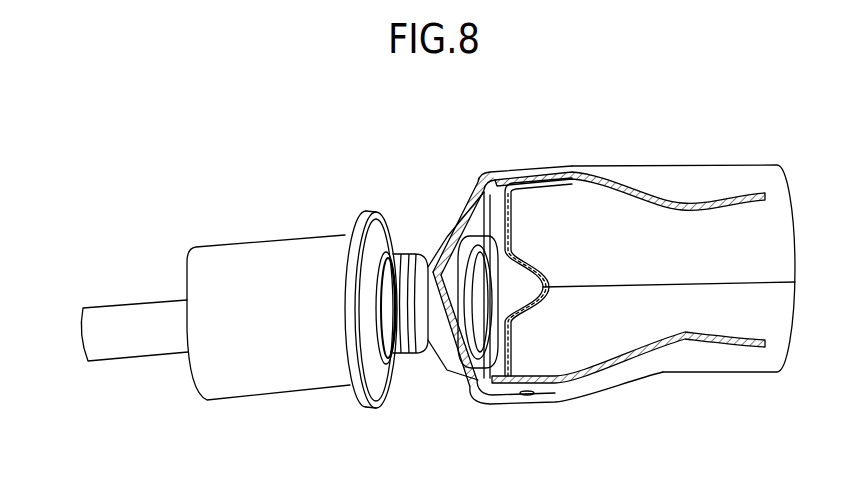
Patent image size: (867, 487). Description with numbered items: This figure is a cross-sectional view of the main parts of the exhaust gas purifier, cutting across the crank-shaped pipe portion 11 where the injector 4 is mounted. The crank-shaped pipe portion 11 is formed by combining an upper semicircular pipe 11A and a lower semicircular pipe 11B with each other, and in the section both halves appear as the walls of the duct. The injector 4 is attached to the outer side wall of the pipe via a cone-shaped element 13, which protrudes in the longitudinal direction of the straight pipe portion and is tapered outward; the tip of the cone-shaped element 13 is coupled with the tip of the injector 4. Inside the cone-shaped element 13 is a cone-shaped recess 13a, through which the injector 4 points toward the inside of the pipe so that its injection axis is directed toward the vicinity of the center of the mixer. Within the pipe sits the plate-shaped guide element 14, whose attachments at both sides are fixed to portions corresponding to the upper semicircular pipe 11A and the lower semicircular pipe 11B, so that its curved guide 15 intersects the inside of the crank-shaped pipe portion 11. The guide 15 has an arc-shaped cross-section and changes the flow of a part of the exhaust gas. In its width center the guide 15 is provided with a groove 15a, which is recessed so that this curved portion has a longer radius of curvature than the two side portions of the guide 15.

The injector 4 is at (270, 394).
The crank-shaped pipe portion 11 is at (716, 167).
The upper semicircular pipe 11A is at (657, 360).
The lower semicircular pipe 11B is at (633, 190).
The cone-shaped element 13 is at (437, 347).
The cone-shaped recess 13a is at (487, 243).
The guide element 14 is at (510, 223).
The guide 15 is at (498, 203).
The groove 15a is at (483, 360).